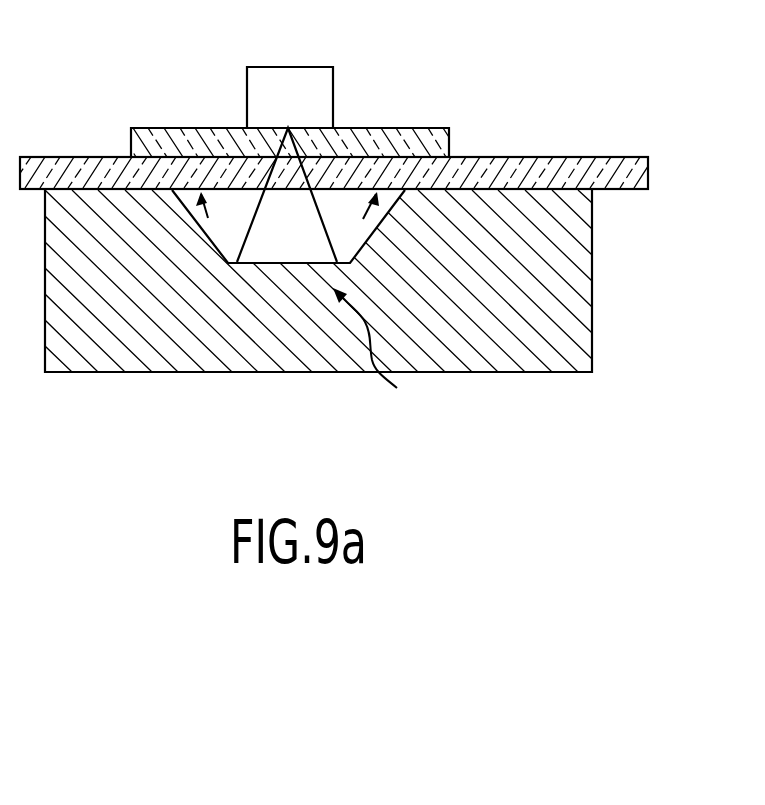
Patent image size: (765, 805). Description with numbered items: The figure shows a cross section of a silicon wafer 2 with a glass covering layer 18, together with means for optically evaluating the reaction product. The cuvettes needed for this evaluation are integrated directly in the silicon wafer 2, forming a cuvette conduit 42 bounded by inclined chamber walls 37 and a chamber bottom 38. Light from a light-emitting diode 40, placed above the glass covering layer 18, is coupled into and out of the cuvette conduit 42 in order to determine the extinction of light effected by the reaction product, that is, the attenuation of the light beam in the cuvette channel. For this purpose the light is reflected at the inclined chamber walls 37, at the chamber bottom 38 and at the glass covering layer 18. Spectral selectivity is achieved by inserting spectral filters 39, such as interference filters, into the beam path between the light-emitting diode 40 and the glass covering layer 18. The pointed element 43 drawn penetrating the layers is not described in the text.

The silicon wafer 2 is at (572, 252).
The glass covering layer 18 is at (506, 163).
The inclined chamber walls 37 is at (383, 223).
The chamber bottom 38 is at (268, 263).
The spectral filters 39 is at (412, 133).
The light-emitting diode 40 is at (310, 75).
The cuvette conduit 42 is at (379, 355).
The spike 43 is at (251, 221).